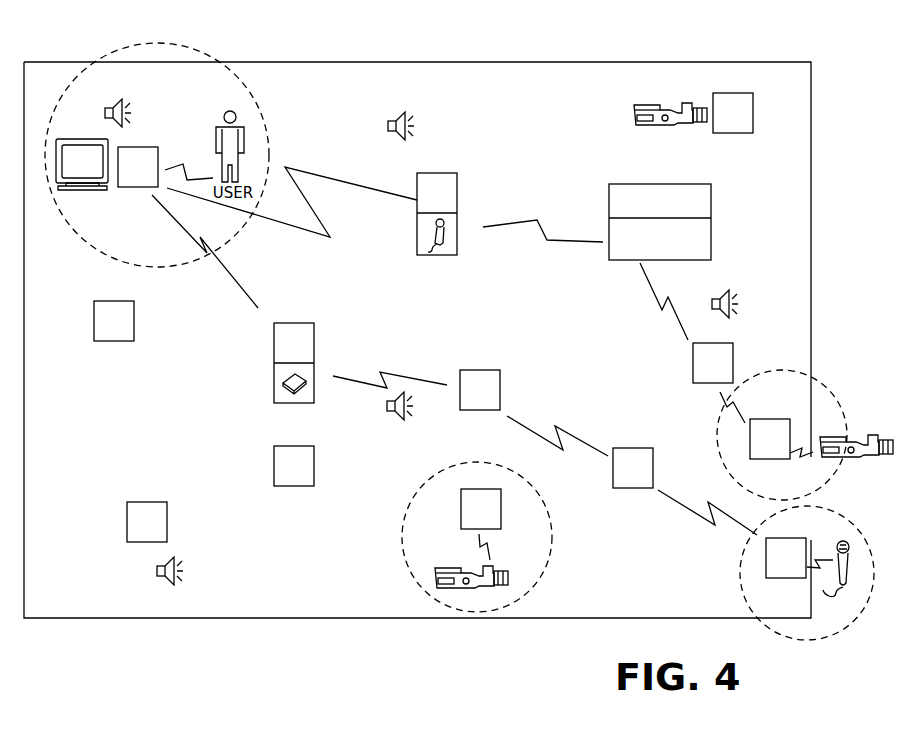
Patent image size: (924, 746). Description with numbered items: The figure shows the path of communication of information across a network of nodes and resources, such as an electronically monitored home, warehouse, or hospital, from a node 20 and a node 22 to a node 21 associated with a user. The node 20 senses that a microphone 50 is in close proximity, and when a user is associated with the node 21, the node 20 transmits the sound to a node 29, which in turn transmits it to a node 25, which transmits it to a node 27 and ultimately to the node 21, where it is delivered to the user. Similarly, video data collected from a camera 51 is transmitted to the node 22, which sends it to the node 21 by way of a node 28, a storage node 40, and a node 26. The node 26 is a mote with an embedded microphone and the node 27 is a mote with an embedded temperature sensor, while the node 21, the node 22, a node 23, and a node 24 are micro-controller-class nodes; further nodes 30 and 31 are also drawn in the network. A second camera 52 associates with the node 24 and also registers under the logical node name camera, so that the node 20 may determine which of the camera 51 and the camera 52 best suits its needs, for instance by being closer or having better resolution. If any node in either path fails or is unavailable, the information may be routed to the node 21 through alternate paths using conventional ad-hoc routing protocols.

The node 20 is at (775, 567).
The node associated with a user 21 is at (127, 176).
The node 22 is at (759, 448).
The node 23 is at (136, 531).
The node 24 is at (470, 518).
The node 25 is at (469, 399).
The node 26 is at (426, 202).
The node 27 is at (283, 352).
The node 28 is at (702, 372).
The node 29 is at (622, 477).
The network node 30 is at (283, 475).
The network node 31 is at (103, 330).
The storage node 40 is at (649, 249).
The microphone 50 is at (862, 569).
The camera 51 is at (856, 430).
The camera 52 is at (482, 571).